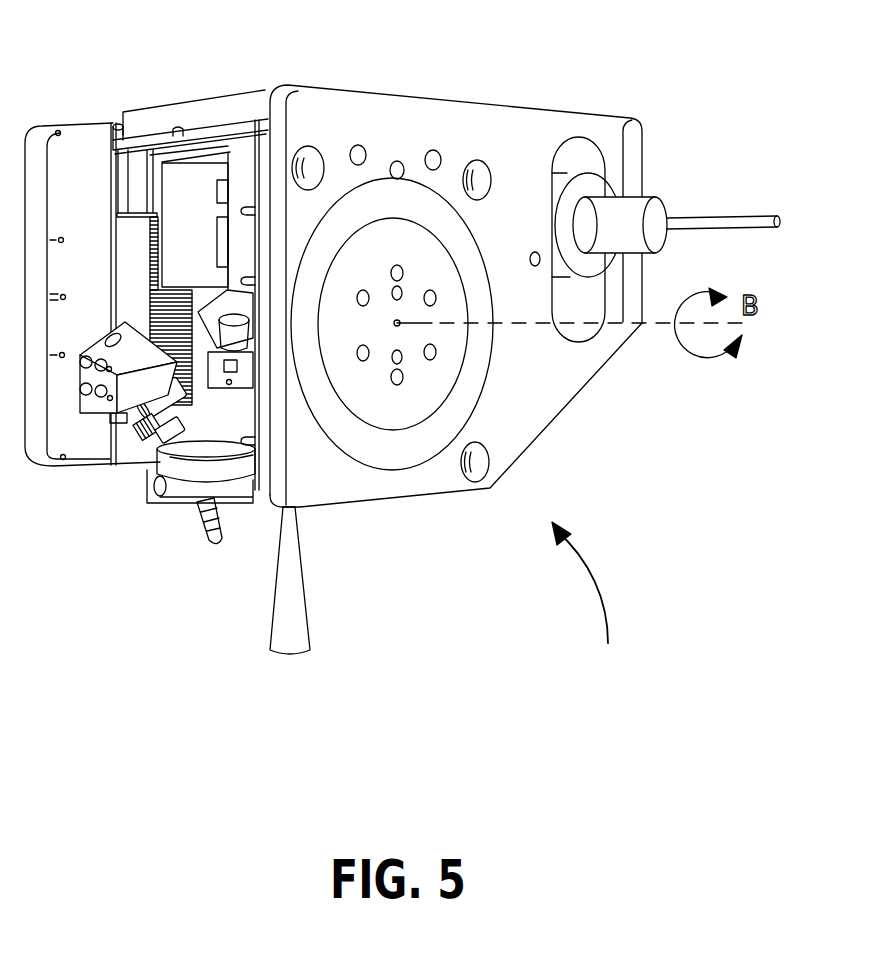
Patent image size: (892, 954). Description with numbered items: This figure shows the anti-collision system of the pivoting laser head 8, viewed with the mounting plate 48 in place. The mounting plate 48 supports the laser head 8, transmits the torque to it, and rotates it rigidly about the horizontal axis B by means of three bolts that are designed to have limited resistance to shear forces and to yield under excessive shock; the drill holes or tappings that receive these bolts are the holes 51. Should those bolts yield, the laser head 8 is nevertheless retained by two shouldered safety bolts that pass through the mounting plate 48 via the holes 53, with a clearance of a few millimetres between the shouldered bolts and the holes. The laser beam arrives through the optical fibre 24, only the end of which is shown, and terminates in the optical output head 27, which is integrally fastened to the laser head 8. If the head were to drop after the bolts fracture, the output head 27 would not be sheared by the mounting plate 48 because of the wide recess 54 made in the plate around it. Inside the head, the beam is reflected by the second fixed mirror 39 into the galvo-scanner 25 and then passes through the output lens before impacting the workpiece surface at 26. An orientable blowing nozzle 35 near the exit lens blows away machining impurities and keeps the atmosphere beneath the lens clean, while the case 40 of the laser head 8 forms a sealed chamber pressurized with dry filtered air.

The laser head 8 is at (584, 601).
The optical fibre 24 is at (730, 223).
The galvo-scanner 25 is at (208, 417).
The workpiece impact point 26 is at (290, 625).
The optical output head 27 is at (595, 190).
The orientable blowing nozzle 35 is at (207, 527).
The second fixed mirror 39 is at (158, 408).
The case 40 is at (72, 123).
The mounting plate 48 is at (313, 102).
The drill holes 51 is at (313, 160).
The holes 53 is at (357, 157).
The recess 54 is at (578, 160).